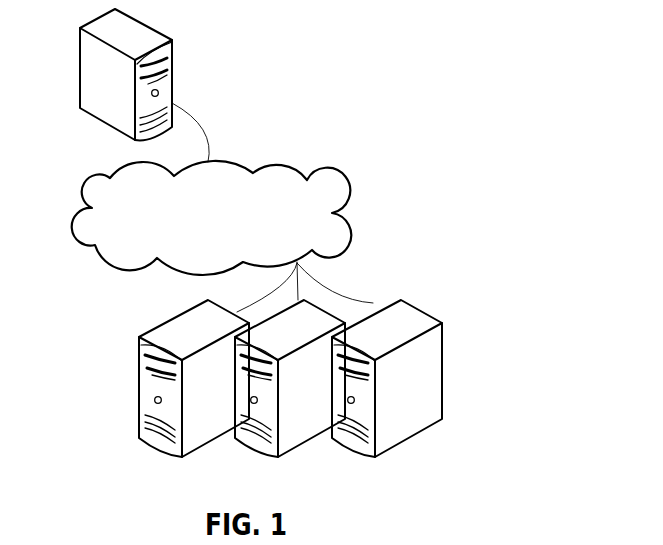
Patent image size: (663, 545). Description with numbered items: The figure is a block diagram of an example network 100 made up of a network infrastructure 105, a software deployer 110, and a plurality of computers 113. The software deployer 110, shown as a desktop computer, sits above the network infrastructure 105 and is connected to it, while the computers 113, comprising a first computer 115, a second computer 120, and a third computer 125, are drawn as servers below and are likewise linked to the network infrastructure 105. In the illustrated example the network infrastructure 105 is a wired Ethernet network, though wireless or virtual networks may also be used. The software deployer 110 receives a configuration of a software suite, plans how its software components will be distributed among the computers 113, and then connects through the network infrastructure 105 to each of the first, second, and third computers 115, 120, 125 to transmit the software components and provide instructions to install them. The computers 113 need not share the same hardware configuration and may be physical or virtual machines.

The network 100 is at (366, 103).
The network infrastructure 105 is at (285, 172).
The software deployer 110 is at (95, 107).
The computers 113 is at (492, 386).
The first computer 115 is at (153, 437).
The second computer 120 is at (247, 438).
The third computer 125 is at (343, 438).